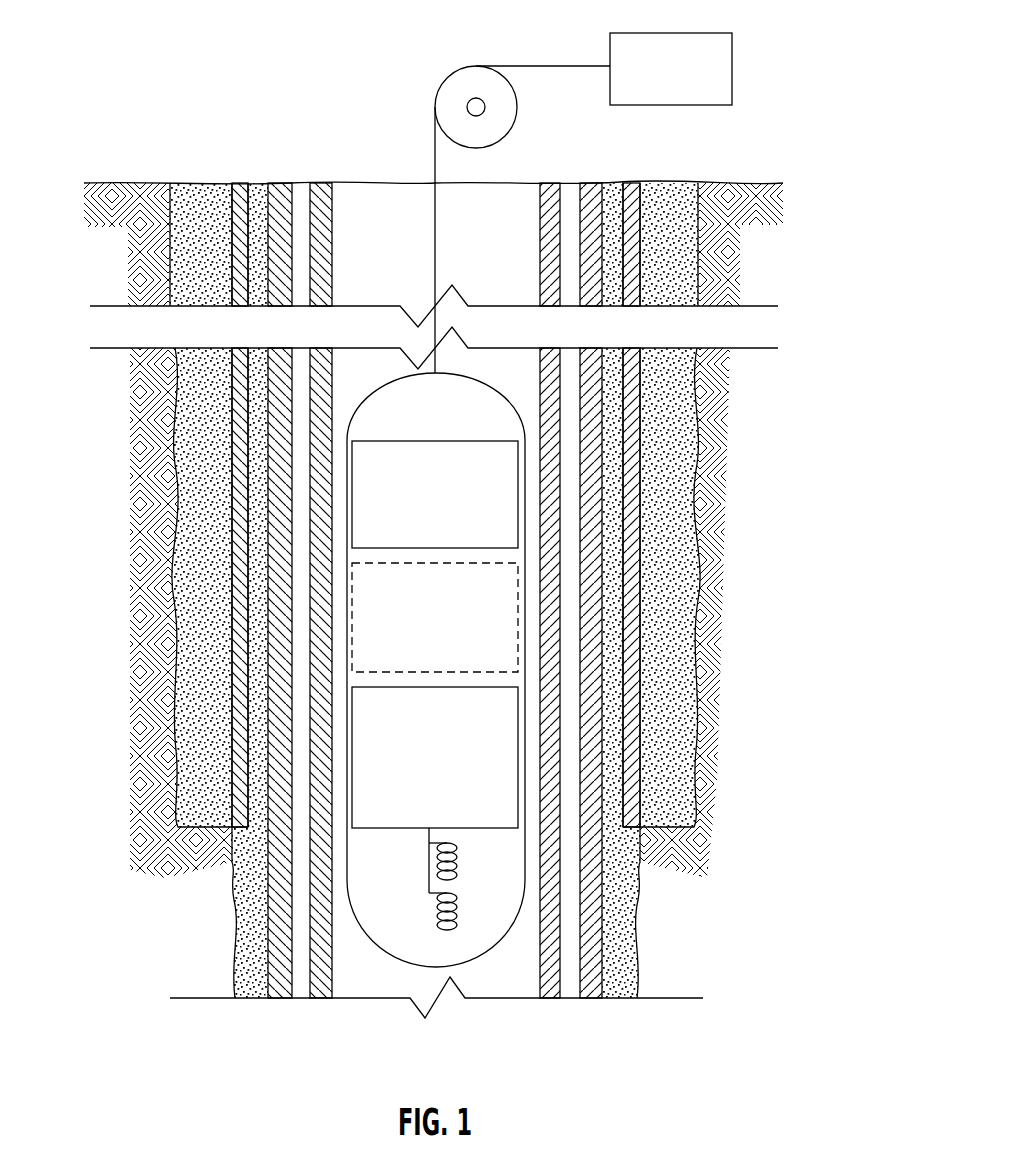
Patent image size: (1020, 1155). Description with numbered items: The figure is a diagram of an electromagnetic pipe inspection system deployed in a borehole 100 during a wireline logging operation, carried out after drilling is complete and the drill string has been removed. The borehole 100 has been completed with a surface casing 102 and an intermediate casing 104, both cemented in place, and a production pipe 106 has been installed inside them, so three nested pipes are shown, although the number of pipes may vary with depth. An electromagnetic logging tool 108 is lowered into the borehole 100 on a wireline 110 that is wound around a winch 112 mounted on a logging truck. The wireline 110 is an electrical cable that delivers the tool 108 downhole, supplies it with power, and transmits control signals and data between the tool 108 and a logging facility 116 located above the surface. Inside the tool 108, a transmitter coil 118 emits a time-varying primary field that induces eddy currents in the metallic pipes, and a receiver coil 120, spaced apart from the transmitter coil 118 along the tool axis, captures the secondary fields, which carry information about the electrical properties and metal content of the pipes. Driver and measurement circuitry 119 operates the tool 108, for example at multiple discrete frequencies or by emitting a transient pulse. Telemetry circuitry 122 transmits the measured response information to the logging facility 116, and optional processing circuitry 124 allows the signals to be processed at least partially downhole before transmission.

The borehole 100 is at (367, 200).
The surface casing 102 is at (634, 183).
The intermediate casing 104 is at (590, 238).
The production pipe 106 is at (542, 217).
The electromagnetic logging tool 108 is at (470, 376).
The wireline 110 is at (435, 148).
The winch 112 is at (500, 141).
The logging facility 116 is at (712, 33).
The transmitter coil 118 is at (458, 862).
The driver and measurement circuitry 119 is at (456, 816).
The receiver coil 120 is at (437, 910).
The telemetry circuitry 122 is at (456, 542).
The processing circuitry 124 is at (456, 665).